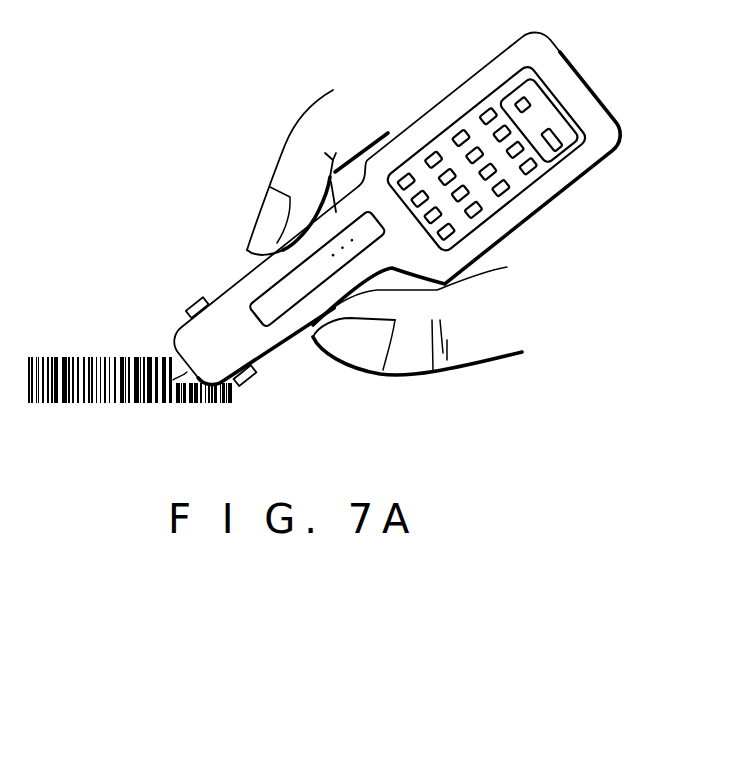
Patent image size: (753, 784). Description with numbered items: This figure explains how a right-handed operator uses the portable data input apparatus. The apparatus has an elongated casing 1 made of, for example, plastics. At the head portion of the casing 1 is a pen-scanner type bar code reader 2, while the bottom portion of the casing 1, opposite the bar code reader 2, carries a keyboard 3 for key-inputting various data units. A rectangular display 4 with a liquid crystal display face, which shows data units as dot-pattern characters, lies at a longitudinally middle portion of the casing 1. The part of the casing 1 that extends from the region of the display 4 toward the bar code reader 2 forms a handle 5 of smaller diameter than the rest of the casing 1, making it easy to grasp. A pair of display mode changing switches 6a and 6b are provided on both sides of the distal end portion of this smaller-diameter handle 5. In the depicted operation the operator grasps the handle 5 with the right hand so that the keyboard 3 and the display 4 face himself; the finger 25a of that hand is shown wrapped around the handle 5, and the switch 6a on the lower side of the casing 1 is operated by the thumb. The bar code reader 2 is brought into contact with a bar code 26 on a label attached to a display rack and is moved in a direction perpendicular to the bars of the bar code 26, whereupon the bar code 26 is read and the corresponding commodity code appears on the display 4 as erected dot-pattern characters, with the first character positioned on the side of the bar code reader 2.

The casing 1 is at (598, 109).
The bar code reader 2 is at (176, 380).
The keyboard 3 is at (493, 102).
The display 4 is at (277, 320).
The handle 5 is at (330, 180).
The display mode changing switch 6a is at (248, 377).
The display mode changing switch 6b is at (199, 306).
The finger 25a is at (410, 374).
The bar code 26 is at (87, 354).